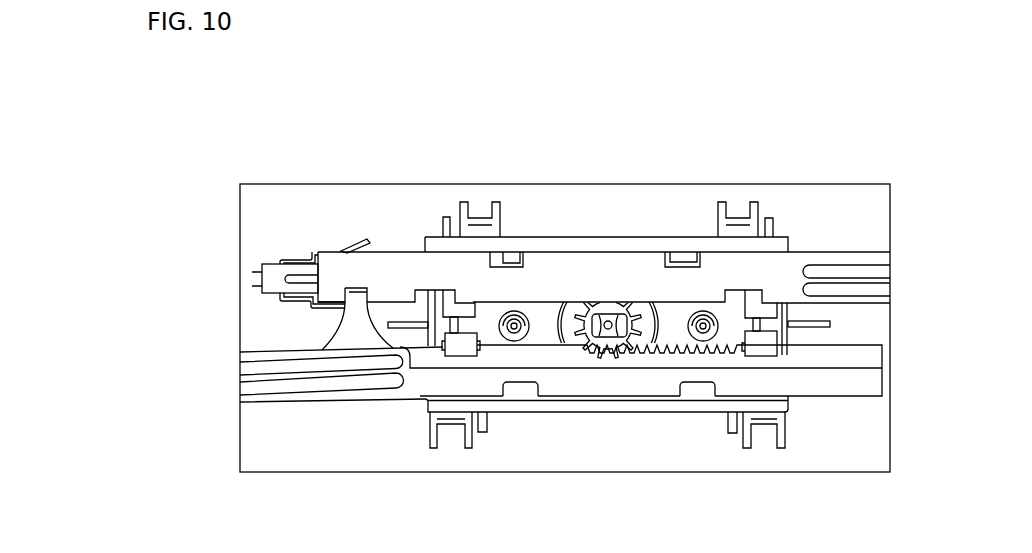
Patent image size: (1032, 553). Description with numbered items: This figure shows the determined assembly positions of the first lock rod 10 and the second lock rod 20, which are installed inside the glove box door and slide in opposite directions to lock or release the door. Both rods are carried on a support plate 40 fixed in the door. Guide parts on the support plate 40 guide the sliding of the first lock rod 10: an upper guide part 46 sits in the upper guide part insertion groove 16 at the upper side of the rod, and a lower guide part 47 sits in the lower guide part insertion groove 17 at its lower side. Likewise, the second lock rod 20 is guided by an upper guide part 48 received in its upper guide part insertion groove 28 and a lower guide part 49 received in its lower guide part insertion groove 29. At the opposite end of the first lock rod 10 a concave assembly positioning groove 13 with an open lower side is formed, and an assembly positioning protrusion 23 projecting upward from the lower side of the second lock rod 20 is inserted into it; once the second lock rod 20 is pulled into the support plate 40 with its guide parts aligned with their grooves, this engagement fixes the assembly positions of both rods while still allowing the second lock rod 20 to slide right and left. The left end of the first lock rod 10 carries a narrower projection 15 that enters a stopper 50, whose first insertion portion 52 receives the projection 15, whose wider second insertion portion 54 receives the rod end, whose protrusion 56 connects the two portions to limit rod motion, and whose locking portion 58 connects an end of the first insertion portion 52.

The first lock rod 10 is at (593, 265).
The assembly positioning groove 13 is at (355, 287).
The projection 15 is at (270, 282).
The upper guide part insertion groove 16 is at (493, 253).
The lower guide part insertion groove 17 is at (436, 288).
The second lock rod 20 is at (838, 382).
The assembly positioning protrusion 23 is at (343, 334).
The upper guide part insertion groove 28 is at (473, 412).
The lower guide part insertion groove 29 is at (511, 318).
The support plate 40 is at (572, 238).
The upper guide part 46 is at (513, 258).
The lower guide part 47 is at (452, 306).
The upper guide part 48 is at (458, 341).
The lower guide part 49 is at (519, 390).
The stopper 50 is at (287, 197).
The first insertion portion 52 is at (298, 260).
The second insertion portion 54 is at (340, 250).
The protrusion 56 is at (317, 253).
The locking portion 58 is at (280, 262).